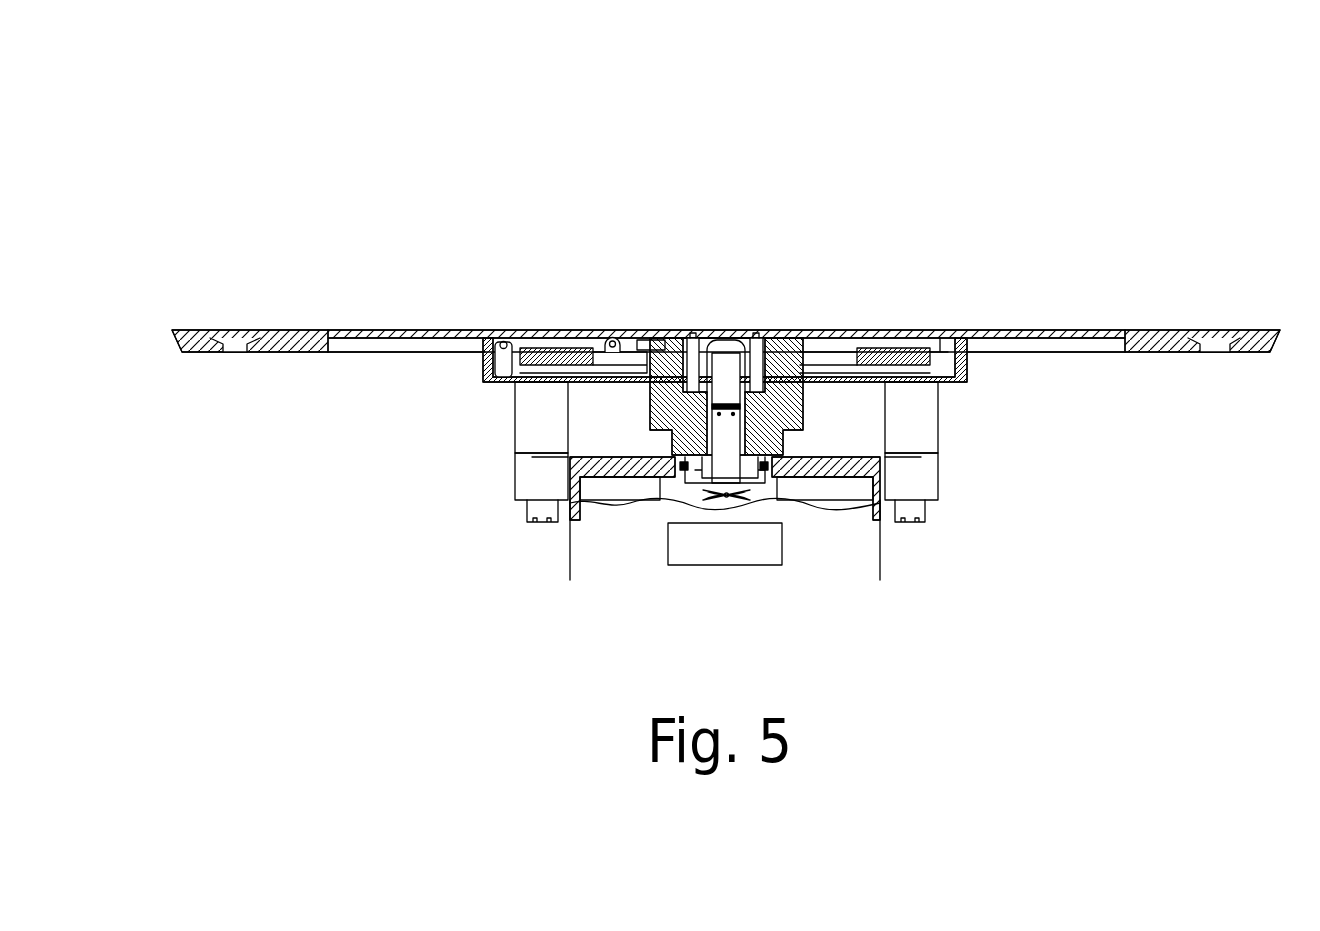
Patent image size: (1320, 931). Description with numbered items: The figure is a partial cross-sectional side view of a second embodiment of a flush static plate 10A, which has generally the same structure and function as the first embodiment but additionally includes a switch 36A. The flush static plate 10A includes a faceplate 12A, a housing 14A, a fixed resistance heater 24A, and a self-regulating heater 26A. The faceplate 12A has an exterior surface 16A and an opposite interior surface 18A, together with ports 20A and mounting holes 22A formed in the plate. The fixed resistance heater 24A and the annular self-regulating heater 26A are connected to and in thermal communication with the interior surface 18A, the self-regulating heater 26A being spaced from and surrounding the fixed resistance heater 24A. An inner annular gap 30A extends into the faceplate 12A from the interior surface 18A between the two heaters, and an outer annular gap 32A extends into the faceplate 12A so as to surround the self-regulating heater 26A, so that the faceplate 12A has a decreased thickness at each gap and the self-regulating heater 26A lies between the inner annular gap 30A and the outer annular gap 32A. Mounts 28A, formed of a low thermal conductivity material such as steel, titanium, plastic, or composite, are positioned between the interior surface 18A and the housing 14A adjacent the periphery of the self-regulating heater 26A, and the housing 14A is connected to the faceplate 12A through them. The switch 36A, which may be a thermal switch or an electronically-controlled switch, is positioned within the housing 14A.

The flush static plate 10A is at (286, 141).
The faceplate 12A is at (285, 296).
The housing 14A is at (860, 548).
The exterior surface 16A is at (1042, 332).
The interior surface 18A is at (1030, 352).
The ports 20A is at (692, 338).
The mounting holes 22A is at (235, 335).
The fixed resistance heater 24A is at (673, 398).
The self-regulating heater 26A is at (513, 365).
The mounts 28A is at (537, 410).
The inner annular gap 30A is at (610, 338).
The outer annular gap 32A is at (508, 338).
The switch 36A is at (772, 557).